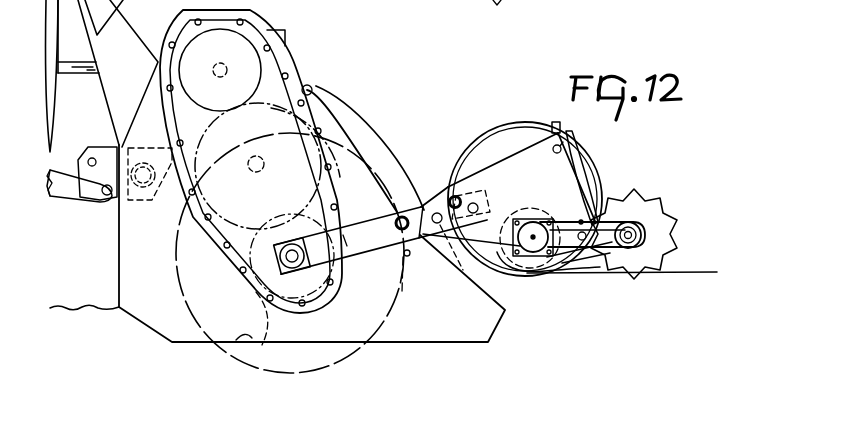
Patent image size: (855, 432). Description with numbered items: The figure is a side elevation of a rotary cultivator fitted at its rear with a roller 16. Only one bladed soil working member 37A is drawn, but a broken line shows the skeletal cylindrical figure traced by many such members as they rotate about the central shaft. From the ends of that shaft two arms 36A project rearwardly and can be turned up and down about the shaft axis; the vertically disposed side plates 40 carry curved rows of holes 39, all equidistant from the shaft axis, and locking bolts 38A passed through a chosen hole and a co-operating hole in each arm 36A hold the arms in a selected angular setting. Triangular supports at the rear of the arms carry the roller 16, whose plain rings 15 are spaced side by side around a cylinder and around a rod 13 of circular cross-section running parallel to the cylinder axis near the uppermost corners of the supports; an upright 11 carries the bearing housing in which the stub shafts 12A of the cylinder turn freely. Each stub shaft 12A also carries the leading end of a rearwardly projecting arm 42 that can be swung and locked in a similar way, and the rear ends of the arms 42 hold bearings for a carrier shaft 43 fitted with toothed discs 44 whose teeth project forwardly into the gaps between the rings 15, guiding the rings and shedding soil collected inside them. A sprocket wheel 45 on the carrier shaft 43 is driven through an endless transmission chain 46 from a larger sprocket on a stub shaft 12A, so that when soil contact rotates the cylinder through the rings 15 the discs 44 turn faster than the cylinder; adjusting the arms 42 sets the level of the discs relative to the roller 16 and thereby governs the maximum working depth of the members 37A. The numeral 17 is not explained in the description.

The upright 11 is at (508, 168).
The stub shaft 12A is at (533, 237).
The rod 13 is at (554, 152).
The plain ring 15 is at (525, 104).
The roller 16 is at (599, 161).
The pulley housing 17 is at (514, 272).
The arm 36A is at (360, 260).
The bladed soil working member 37A is at (245, 342).
The locking bolt 38A is at (400, 220).
The hole 39 is at (410, 253).
The side plate 40 is at (482, 327).
The arm 42 is at (615, 268).
The carrier shaft 43 is at (680, 226).
The toothed disc 44 is at (661, 213).
The sprocket wheel 45 is at (673, 254).
The transmission chain 46 is at (623, 197).